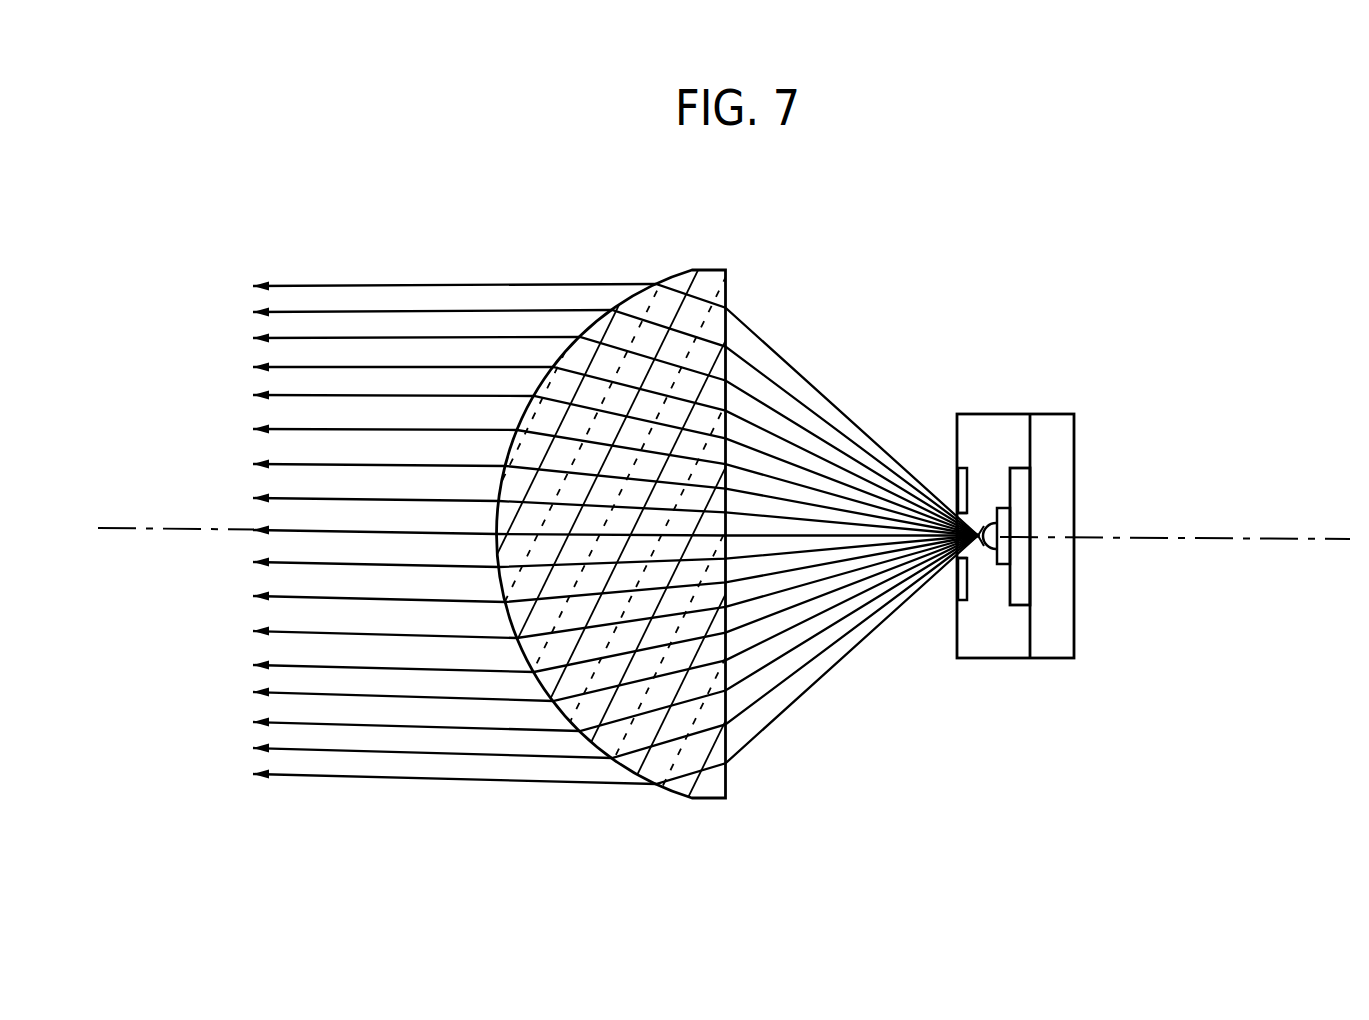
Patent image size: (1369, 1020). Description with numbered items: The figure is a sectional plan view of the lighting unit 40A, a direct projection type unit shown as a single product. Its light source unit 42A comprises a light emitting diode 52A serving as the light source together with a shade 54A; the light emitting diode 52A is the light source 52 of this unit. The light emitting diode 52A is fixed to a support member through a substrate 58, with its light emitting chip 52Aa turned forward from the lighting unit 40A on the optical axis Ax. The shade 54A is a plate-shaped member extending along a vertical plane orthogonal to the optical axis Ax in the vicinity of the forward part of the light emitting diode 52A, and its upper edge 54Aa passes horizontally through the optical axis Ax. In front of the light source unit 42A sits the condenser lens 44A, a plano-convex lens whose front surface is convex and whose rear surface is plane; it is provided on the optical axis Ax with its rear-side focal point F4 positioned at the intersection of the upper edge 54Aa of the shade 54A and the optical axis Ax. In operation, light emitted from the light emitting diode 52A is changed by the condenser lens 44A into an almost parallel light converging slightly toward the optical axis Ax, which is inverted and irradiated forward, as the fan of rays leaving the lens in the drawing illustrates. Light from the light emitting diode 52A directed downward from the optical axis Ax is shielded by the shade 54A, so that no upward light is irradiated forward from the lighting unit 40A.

The lighting unit 40A is at (1040, 298).
The light source unit 42A is at (905, 314).
The condenser lens 44A is at (644, 291).
The light source 52 is at (1076, 489).
The light emitting diode 52A is at (990, 570).
The light emitting chip 52Aa is at (995, 522).
The shade 54A is at (955, 588).
The upper edge 54Aa is at (964, 503).
The substrate 58 is at (1038, 577).
The focal point F4 is at (912, 515).
The optical axis Ax is at (165, 527).